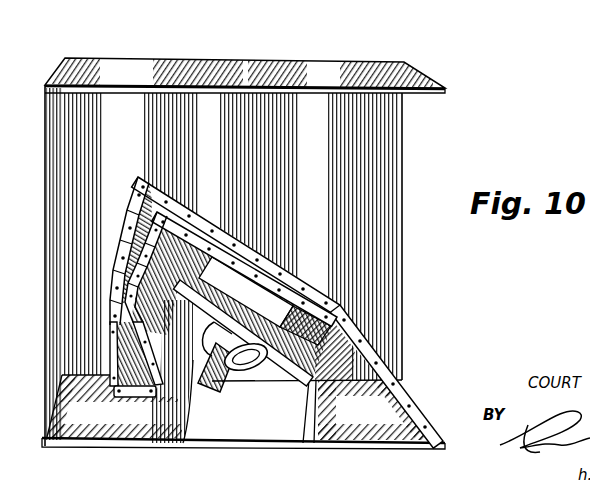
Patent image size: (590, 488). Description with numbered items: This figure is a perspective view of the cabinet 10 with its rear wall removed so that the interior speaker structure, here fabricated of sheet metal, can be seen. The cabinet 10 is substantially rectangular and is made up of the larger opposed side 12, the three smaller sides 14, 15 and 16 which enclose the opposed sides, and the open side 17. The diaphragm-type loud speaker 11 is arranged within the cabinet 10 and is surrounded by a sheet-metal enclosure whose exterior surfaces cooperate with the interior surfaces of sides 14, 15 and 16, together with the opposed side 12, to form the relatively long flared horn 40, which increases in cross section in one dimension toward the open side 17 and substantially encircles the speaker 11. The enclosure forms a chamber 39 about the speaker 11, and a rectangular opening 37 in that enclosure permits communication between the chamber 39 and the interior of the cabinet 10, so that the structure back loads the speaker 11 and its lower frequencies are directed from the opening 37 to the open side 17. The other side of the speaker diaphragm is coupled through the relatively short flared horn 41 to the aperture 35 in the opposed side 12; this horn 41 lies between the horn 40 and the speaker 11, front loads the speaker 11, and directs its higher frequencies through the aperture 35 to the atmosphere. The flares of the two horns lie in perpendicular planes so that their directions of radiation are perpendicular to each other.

The cabinet 10 is at (90, 55).
The smaller side 14 is at (403, 74).
The smaller side 15 is at (50, 224).
The opposed side 12 is at (383, 236).
The open side 17 is at (441, 173).
The smaller side 16 is at (118, 428).
The flared horn 40 is at (248, 159).
The flared horn 41 is at (237, 275).
The aperture 35 is at (280, 304).
The opening 37 is at (183, 443).
The chamber 39 is at (225, 421).
The loud speaker 11 is at (270, 365).